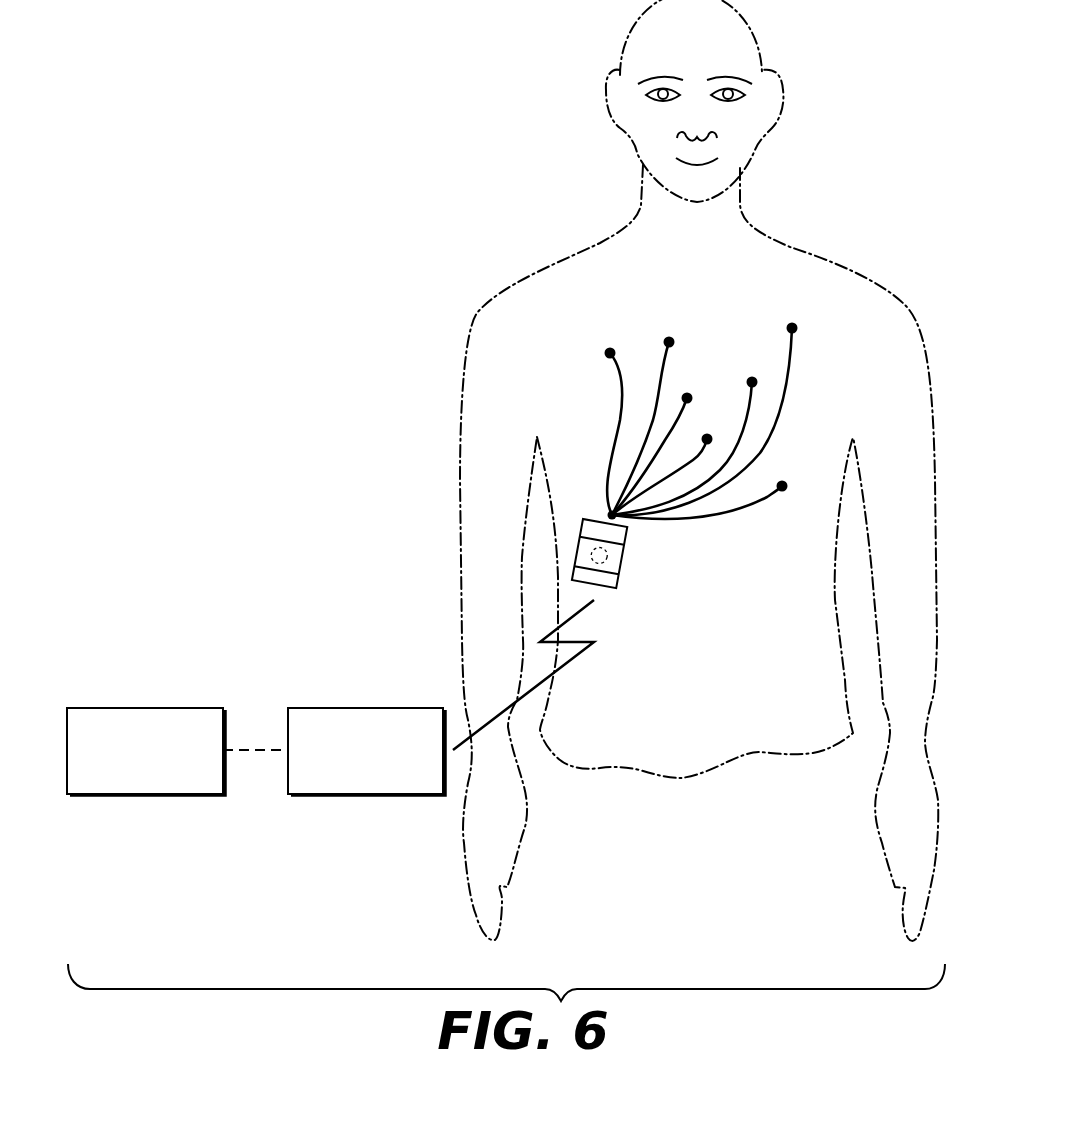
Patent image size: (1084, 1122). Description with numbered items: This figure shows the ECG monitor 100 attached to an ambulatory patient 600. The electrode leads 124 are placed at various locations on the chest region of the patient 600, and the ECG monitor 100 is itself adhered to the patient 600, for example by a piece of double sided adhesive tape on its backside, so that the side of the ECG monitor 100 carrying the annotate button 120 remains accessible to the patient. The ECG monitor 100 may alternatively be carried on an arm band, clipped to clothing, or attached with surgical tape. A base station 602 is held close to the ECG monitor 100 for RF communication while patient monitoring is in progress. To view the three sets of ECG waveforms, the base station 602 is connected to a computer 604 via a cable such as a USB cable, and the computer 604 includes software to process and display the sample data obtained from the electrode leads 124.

The ambulatory patient 600 is at (748, 152).
The electrode leads 124 is at (620, 380).
The ECG monitor 100 is at (627, 533).
The annotate button 120 is at (622, 562).
The base station 602 is at (340, 708).
The computer 604 is at (123, 708).